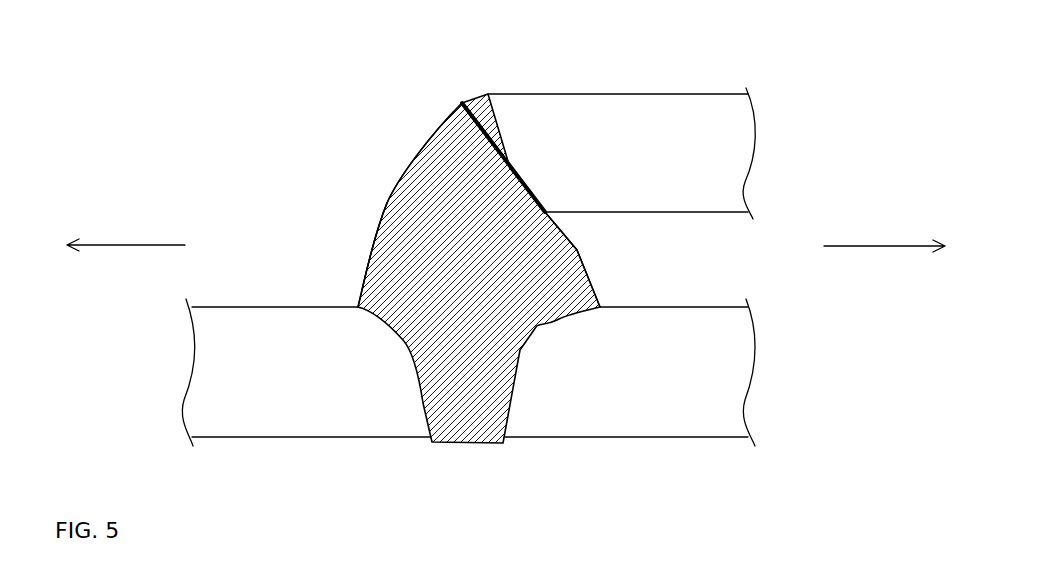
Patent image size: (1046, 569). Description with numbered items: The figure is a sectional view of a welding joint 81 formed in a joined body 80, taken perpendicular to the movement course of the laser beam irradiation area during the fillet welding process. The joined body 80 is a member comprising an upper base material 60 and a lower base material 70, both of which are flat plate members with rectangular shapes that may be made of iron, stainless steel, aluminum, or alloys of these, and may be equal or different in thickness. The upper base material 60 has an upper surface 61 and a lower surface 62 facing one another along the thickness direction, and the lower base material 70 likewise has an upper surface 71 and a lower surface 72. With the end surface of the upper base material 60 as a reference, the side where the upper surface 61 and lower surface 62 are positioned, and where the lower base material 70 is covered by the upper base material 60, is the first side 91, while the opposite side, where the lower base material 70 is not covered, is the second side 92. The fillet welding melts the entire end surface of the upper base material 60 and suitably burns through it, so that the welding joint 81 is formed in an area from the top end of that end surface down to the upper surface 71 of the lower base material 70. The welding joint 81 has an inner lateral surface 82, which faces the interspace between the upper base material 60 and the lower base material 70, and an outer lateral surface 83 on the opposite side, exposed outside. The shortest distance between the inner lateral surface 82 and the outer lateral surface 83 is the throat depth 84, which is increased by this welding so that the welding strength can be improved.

The upper base material 60 is at (662, 146).
The upper surface 61 is at (704, 94).
The lower surface 62 is at (677, 212).
The lower base material 70 is at (511, 362).
The upper surface 71 is at (268, 307).
The lower surface 72 is at (360, 437).
The joined body 80 is at (407, 234).
The welding joint 81 is at (405, 217).
The inner lateral surface 82 is at (577, 250).
The outer lateral surface 83 is at (373, 260).
The throat depth 84 is at (487, 128).
The first side 91 is at (884, 247).
The second side 92 is at (136, 246).